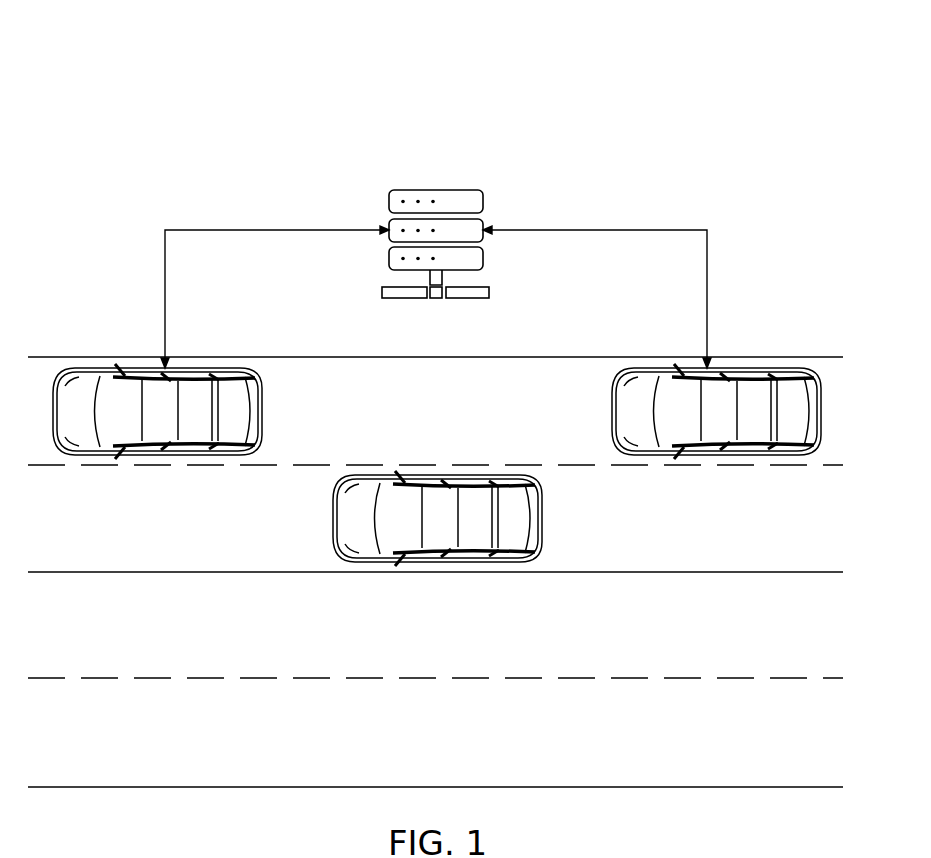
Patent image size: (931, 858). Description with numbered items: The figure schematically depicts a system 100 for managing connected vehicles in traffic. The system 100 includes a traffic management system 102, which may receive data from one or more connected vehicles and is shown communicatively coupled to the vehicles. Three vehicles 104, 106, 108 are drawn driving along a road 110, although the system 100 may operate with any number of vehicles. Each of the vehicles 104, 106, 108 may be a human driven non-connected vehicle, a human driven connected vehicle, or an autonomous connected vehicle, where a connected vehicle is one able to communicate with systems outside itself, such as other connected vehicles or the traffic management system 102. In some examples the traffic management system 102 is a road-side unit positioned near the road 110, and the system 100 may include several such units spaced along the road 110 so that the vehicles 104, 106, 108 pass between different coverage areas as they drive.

The system 100 is at (176, 100).
The traffic management system 102 is at (432, 190).
The vehicle 104 is at (222, 372).
The vehicle 106 is at (502, 480).
The vehicle 108 is at (778, 372).
The road 110 is at (128, 332).